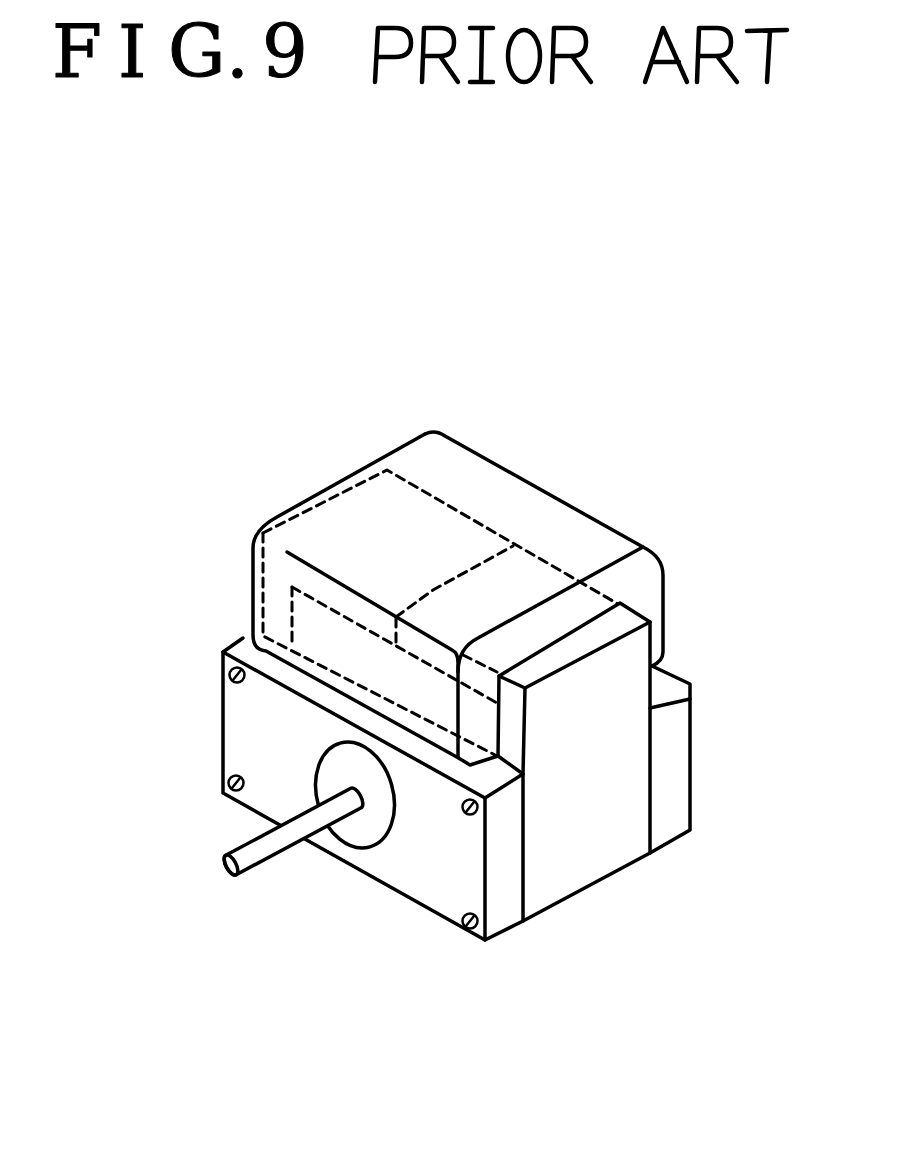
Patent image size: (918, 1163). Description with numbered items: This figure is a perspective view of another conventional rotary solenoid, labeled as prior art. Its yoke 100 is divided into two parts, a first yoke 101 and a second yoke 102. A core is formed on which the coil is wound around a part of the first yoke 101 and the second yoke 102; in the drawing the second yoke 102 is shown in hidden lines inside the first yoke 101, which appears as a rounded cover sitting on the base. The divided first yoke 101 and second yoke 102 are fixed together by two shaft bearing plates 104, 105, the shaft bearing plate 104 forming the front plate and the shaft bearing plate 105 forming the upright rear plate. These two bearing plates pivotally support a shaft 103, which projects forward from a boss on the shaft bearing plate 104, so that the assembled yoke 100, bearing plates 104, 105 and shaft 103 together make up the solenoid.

The yoke 100 is at (699, 434).
The first yoke 101 is at (560, 567).
The second yoke 102 is at (423, 487).
The shaft 103 is at (254, 866).
The shaft bearing plate 104 is at (410, 884).
The shaft bearing plate 105 is at (683, 787).